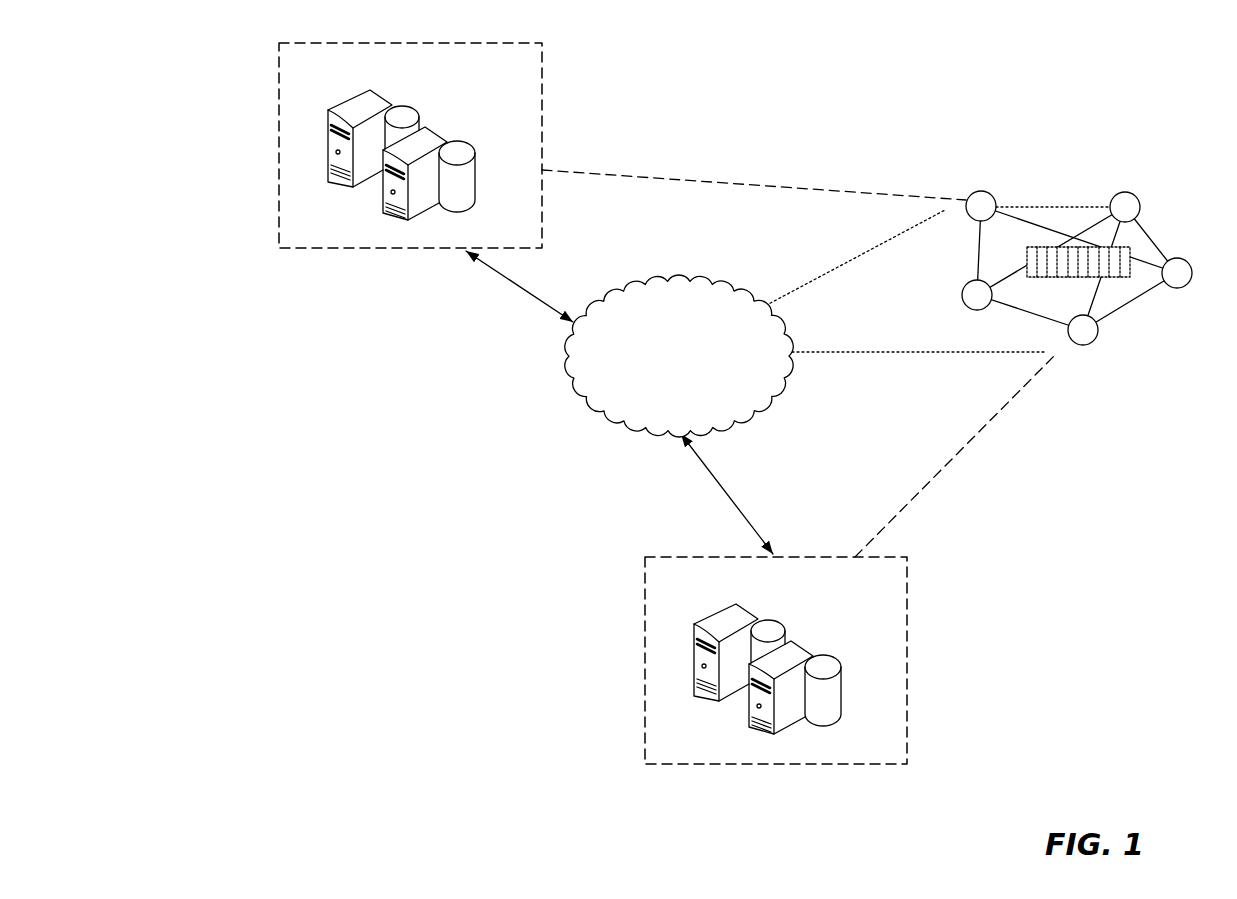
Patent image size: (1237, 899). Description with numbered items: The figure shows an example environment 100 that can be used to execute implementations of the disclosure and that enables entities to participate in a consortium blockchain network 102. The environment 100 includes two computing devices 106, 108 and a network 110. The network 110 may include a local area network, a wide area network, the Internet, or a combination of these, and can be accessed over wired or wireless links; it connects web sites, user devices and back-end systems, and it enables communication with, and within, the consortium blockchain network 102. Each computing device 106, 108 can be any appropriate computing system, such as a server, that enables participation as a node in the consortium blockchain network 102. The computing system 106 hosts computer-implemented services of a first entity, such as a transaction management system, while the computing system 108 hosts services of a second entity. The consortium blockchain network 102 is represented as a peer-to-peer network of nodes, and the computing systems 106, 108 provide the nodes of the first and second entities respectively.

The example environment 100 is at (296, 550).
The consortium blockchain network 102 is at (1113, 163).
The computing device 106 is at (542, 145).
The computing device 108 is at (907, 667).
The network 110 is at (680, 280).